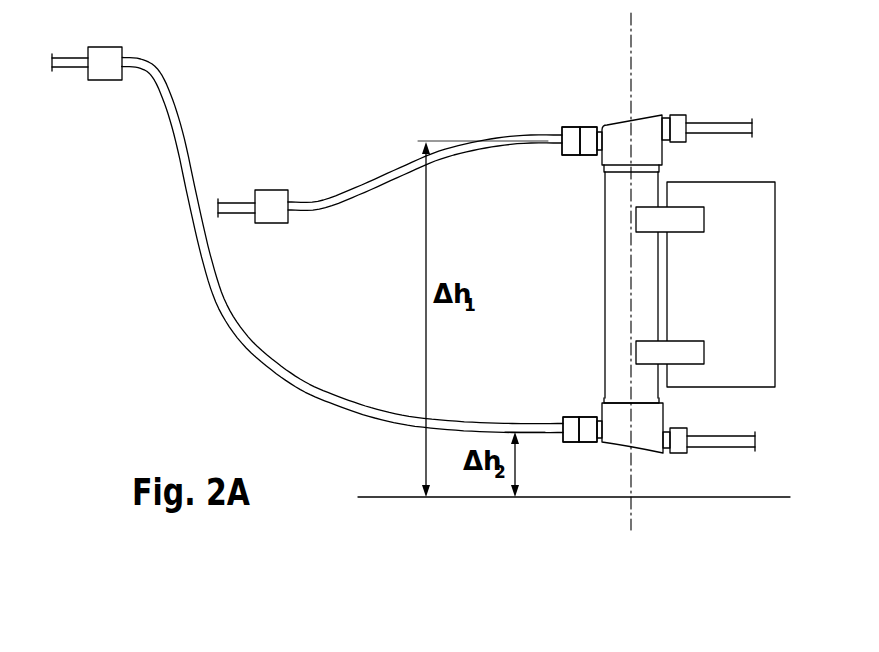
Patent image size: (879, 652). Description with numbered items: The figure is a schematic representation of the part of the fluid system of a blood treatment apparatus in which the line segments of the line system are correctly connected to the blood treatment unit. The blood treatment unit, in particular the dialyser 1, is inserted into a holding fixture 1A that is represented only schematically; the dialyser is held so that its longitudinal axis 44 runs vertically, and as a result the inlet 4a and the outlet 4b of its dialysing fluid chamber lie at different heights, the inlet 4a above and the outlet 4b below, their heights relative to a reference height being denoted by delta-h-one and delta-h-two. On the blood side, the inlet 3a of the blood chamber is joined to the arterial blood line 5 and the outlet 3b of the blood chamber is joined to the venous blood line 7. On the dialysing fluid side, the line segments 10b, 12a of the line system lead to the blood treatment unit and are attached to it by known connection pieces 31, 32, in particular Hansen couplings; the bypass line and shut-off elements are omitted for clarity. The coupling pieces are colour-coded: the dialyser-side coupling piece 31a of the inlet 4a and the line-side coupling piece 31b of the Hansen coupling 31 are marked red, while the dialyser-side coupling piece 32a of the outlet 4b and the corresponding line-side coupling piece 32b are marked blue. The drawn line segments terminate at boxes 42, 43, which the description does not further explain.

The dialyser 1 is at (600, 269).
The holding fixture 1A is at (775, 222).
The inlet of the blood chamber 3a is at (666, 454).
The outlet of the blood chamber 3b is at (665, 118).
The inlet of the dialysing fluid chamber 4a is at (610, 130).
The outlet of the dialysing fluid chamber 4b is at (600, 420).
The arterial blood line 5 is at (736, 448).
The venous blood line 7 is at (723, 125).
The line segment 10b is at (343, 200).
The line segment 12a is at (338, 407).
The connection piece 31 is at (573, 163).
The dialyser-side coupling piece 31a is at (587, 130).
The line-side coupling piece 31b is at (565, 130).
The connection piece 32 is at (566, 407).
The dialyser-side coupling piece 32a is at (586, 443).
The line-side coupling piece 32b is at (570, 443).
The upper line connector box 42 is at (272, 188).
The lower line connector box 43 is at (100, 83).
The longitudinal axis 44 is at (637, 31).